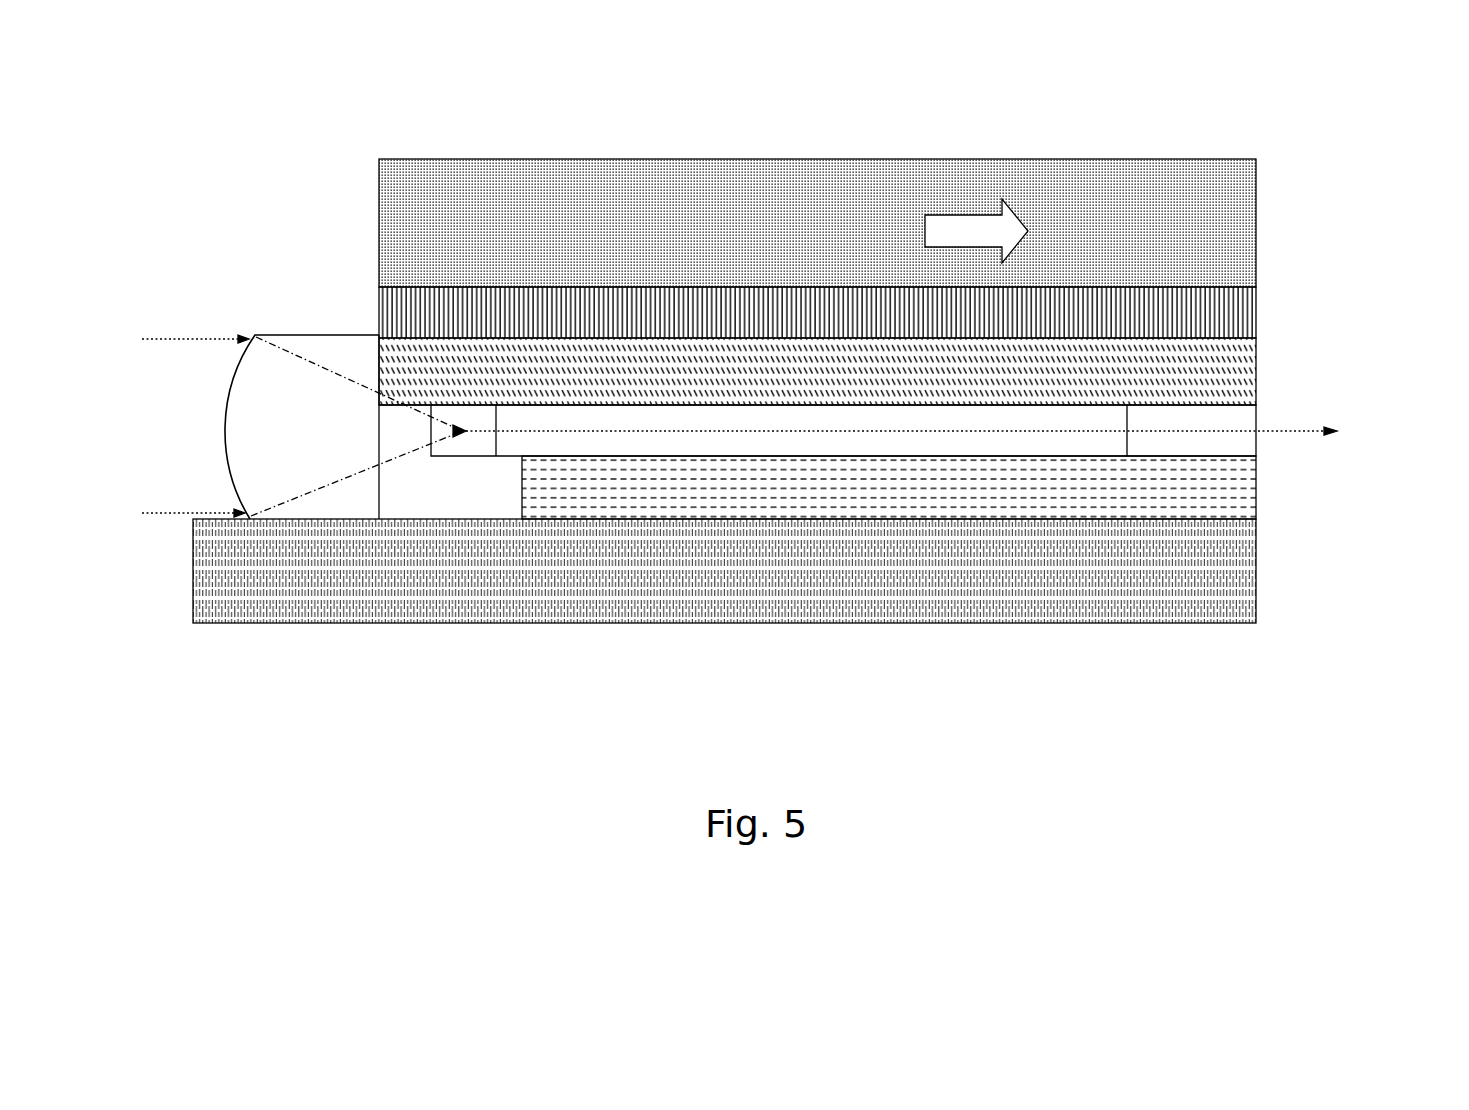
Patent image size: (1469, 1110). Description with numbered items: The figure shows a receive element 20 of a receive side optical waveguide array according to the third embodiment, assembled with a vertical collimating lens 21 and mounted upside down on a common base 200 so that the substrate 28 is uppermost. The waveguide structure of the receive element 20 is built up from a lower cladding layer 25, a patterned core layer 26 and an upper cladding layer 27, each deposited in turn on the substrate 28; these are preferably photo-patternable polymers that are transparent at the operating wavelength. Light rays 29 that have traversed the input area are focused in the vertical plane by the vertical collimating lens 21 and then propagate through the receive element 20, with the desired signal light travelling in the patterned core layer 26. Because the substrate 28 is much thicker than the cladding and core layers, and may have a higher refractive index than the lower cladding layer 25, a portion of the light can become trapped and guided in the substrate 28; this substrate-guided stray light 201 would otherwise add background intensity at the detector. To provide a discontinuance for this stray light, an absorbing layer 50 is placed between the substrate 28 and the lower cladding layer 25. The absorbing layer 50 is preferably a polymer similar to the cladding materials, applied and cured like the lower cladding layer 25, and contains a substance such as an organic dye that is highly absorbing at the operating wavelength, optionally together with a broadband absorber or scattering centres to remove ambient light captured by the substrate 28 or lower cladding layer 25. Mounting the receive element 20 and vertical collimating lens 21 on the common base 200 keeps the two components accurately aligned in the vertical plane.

The receive element 20 is at (924, 299).
The vertical collimating lens 21 is at (281, 333).
The lower cladding layer 25 is at (1262, 371).
The patterned core layer 26 is at (1262, 414).
The upper cladding layer 27 is at (1262, 496).
The substrate 28 is at (1258, 251).
The light rays 29 is at (722, 424).
The absorbing layer 50 is at (1262, 311).
The common base 200 is at (1262, 571).
The substrate-guided stray light 201 is at (1008, 231).